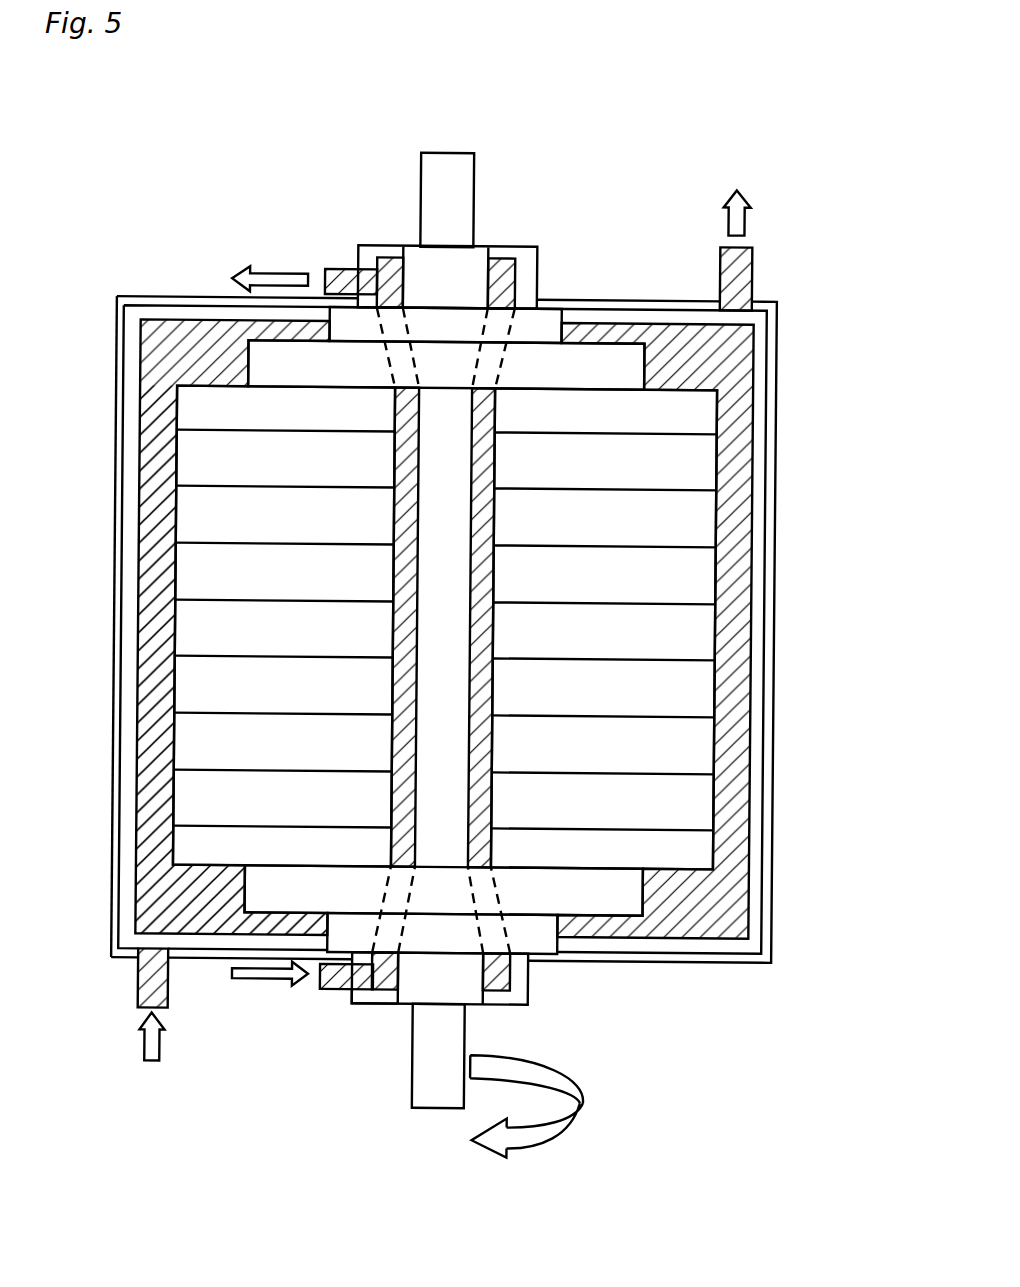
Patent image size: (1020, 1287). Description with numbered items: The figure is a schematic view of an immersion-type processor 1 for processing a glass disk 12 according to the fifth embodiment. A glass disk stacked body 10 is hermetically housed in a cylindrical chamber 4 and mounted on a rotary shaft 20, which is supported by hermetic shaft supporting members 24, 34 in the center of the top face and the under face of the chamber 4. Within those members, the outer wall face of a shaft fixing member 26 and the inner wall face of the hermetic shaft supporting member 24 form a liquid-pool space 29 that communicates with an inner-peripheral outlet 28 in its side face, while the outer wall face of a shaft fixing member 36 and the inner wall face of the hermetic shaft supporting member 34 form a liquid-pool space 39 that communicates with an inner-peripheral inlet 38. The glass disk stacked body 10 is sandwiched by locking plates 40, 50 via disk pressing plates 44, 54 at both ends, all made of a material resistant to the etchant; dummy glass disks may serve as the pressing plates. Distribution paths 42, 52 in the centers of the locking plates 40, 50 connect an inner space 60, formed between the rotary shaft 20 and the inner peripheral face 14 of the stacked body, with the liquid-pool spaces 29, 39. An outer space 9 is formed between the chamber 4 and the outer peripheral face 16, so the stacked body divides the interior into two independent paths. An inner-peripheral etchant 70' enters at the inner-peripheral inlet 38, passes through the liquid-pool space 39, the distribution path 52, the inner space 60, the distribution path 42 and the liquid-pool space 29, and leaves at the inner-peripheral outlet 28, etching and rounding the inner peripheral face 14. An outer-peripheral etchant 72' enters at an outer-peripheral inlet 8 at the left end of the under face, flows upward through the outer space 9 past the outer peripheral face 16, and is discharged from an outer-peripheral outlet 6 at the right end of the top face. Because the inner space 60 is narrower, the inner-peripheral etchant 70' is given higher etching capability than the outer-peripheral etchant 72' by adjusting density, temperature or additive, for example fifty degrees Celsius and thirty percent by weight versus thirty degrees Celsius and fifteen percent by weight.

The immersion-type processor 1 is at (457, 620).
The cylindrical chamber 4 is at (775, 562).
The outer-peripheral outlet 6 is at (731, 285).
The outer-peripheral inlet 8 is at (140, 982).
The outer space 9 is at (728, 782).
The glass disk stacked body 10 is at (455, 604).
The glass disk 12 is at (195, 685).
The inner peripheral face 14 is at (400, 612).
The outer peripheral face 16 is at (172, 800).
The rotary shaft 20 is at (432, 165).
The hermetic shaft supporting member 24 is at (364, 257).
The shaft fixing member 26 is at (470, 262).
The inner-peripheral outlet 28 is at (338, 270).
The liquid-pool space 29 is at (505, 285).
The hermetic shaft supporting member 34 is at (356, 1002).
The shaft fixing member 36 is at (446, 992).
The inner-peripheral inlet 38 is at (330, 990).
The liquid-pool space 39 is at (500, 967).
The locking plate 40 is at (260, 367).
The distribution path 42 is at (379, 331).
The disk pressing plate 44 is at (185, 412).
The locking plate 50 is at (706, 855).
The distribution path 52 is at (387, 883).
The disk pressing plate 54 is at (632, 893).
The inner space 60 is at (482, 687).
The inner-peripheral etchant 70' is at (221, 621).
The outer-peripheral etchant 72' is at (435, 622).